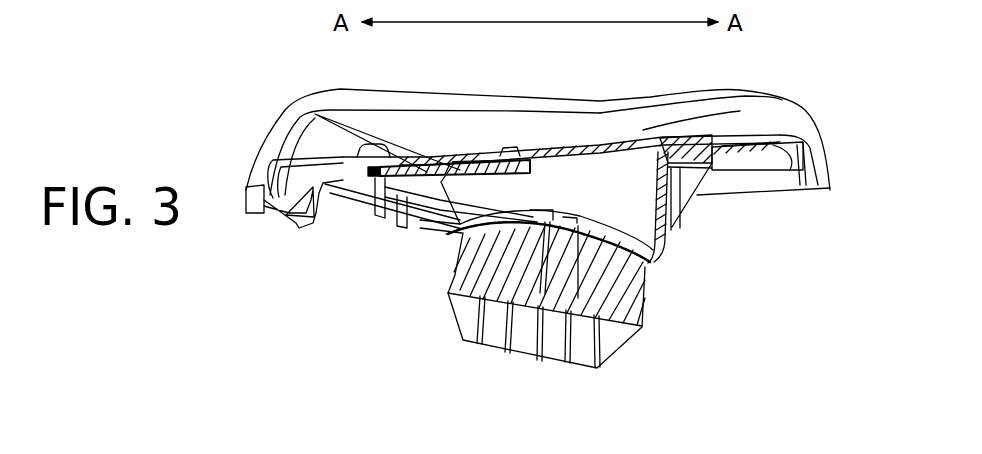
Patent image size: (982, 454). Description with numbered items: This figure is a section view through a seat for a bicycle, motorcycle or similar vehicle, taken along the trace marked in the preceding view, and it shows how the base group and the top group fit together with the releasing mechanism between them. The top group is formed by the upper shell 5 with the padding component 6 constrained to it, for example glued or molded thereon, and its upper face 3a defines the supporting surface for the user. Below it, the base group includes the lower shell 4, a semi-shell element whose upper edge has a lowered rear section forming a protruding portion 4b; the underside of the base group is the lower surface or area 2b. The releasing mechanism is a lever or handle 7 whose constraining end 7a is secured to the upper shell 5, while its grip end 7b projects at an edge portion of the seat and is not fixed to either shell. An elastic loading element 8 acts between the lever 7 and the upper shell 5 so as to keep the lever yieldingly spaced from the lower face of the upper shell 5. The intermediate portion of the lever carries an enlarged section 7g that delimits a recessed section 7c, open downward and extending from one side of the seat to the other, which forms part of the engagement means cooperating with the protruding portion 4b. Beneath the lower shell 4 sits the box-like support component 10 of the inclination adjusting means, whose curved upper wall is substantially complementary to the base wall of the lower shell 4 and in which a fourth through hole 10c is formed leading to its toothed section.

The lower surface or area 2b is at (660, 260).
The upper face or zone 3a is at (478, 95).
The lower shell 4 is at (683, 220).
The protruding portion 4b is at (385, 195).
The upper shell 5 is at (775, 150).
The padding component 6 is at (782, 100).
The lever or handle 7 is at (336, 230).
The constraining or fixing end or portion 7a is at (520, 150).
The grip end 7b is at (246, 210).
The recessed section 7c is at (377, 190).
The enlarged section 7g is at (370, 170).
The elastic loading element 8 is at (370, 145).
The support component 10 is at (577, 314).
The fourth through hole 10c is at (541, 316).